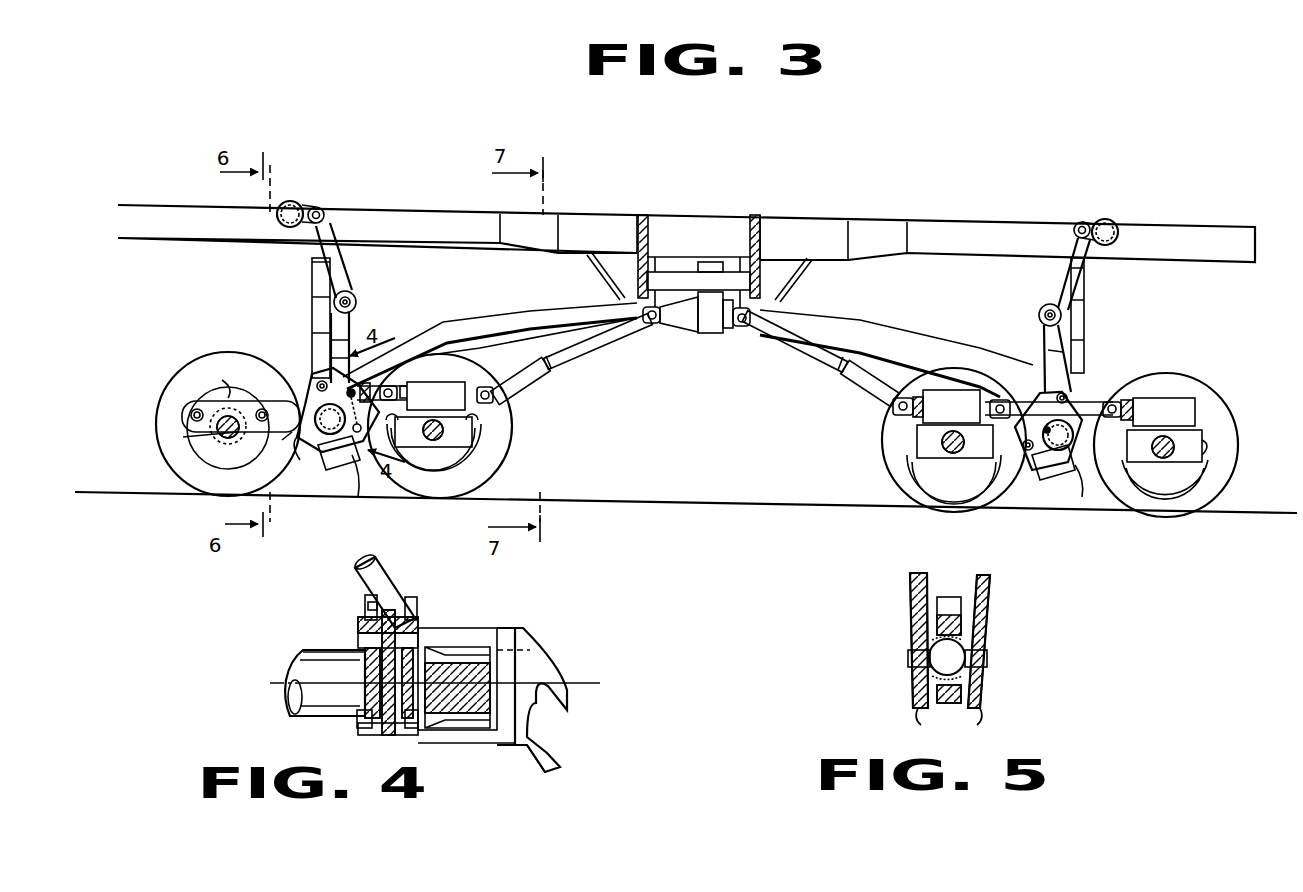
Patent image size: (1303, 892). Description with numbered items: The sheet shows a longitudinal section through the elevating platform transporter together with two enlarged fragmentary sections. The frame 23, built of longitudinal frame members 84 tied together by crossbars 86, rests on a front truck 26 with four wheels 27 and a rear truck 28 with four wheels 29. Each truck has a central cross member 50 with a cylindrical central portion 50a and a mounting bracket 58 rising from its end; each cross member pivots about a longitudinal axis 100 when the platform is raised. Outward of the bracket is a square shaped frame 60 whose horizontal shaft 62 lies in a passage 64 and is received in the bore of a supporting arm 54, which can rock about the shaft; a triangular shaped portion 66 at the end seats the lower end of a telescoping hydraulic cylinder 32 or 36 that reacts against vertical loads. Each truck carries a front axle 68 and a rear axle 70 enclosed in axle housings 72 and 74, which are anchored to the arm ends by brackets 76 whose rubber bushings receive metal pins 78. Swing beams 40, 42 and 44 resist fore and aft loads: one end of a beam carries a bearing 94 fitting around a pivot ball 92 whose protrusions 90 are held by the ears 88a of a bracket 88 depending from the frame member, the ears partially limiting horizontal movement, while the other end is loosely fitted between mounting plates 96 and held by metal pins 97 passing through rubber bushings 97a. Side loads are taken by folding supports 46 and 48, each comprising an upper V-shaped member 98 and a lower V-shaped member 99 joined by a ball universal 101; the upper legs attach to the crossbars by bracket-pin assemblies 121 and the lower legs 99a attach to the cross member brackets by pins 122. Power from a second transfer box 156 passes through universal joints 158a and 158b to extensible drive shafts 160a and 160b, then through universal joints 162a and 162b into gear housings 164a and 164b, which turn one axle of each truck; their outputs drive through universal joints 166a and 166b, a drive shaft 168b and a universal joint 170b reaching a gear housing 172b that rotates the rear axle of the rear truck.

In FIG. 3, the frame 23 is at (745, 212).
In FIG. 3, the front truck 26 is at (180, 431).
In FIG. 3, the wheels 27 is at (160, 390).
In FIG. 3, the rear truck 28 is at (900, 430).
In FIG. 3, the wheels 29 is at (905, 496).
In FIG. 3, the telescoping hydraulic cylinder 32 is at (311, 285).
In FIG. 3, the telescoping hydraulic cylinder 36 is at (1088, 293).
In FIG. 3, the swing beam 40 is at (455, 325).
In FIG. 4, the swing beam 40 is at (360, 668).
In FIG. 5, the swing beam 42 is at (949, 600).
In FIG. 3, the swing beam 44 is at (868, 332).
In FIG. 3, the folding support 46 is at (352, 280).
In FIG. 3, the folding support 48 is at (1052, 275).
In FIG. 3, the central cross member 50 is at (300, 395).
In FIG. 3, the cylindrical central portion 50a is at (340, 462).
In FIG. 4, the cylindrical central portion 50a is at (300, 652).
In FIG. 3, the supporting arm 54 is at (292, 432).
In FIG. 4, the supporting arm 54 is at (465, 655).
In FIG. 3, the mounting bracket 58 is at (312, 398).
In FIG. 4, the mounting bracket 58 is at (360, 700).
In FIG. 4, the square shaped frame 60 is at (535, 632).
In FIG. 4, the horizontal shaft 62 is at (540, 652).
In FIG. 4, the passage 64 is at (505, 746).
In FIG. 3, the triangular shaped portion 66 is at (722, 487).
In FIG. 4, the triangular shaped portion 66 is at (548, 752).
In FIG. 3, the front axle 68 is at (228, 441).
In FIG. 3, the rear axle 70 is at (435, 442).
In FIG. 3, the axle housing 72 is at (222, 440).
In FIG. 3, the axle housing 74 is at (462, 446).
In FIG. 3, the brackets 76 is at (220, 383).
In FIG. 3, the metal pins 78 is at (183, 416).
In FIG. 3, the longitudinal frame member 84 is at (686, 221).
In FIG. 3, the crossbar 86 is at (290, 201).
In FIG. 3, the bracket 88 is at (605, 272).
In FIG. 5, the bracket 88 is at (995, 600).
In FIG. 5, the ears 88a is at (949, 726).
In FIG. 5, the protrusions 90 is at (906, 660).
In FIG. 5, the pivot ball 92 is at (962, 648).
In FIG. 5, the bearing 94 is at (930, 640).
In FIG. 3, the mounting plates 96 is at (298, 462).
In FIG. 4, the mounting plates 96 is at (356, 650).
In FIG. 3, the metal pins 97 is at (1028, 450).
In FIG. 4, the metal pins 97 is at (358, 626).
In FIG. 4, the rubber bushings 97a is at (417, 612).
In FIG. 3, the upper V-shaped member 98 is at (311, 259).
In FIG. 3, the lower V-shaped member 99 is at (328, 318).
In FIG. 4, the legs 99a is at (398, 575).
In FIG. 4, the longitudinal axis 100 is at (240, 686).
In FIG. 3, the ball universal 101 is at (358, 298).
In FIG. 3, the bracket-pin assemblies 121 is at (325, 212).
In FIG. 3, the pins 122 is at (320, 380).
In FIG. 4, the pins 122 is at (362, 610).
In FIG. 3, the second transfer box 156 is at (686, 334).
In FIG. 3, the universal joint 158a is at (652, 326).
In FIG. 3, the universal joint 158b is at (742, 330).
In FIG. 3, the drive shaft 160a is at (575, 358).
In FIG. 3, the drive shaft 160b is at (824, 370).
In FIG. 3, the universal joint 162a is at (490, 386).
In FIG. 3, the universal joint 162b is at (903, 393).
In FIG. 3, the gear housing 164a is at (470, 430).
In FIG. 3, the gear housing 164b is at (930, 448).
In FIG. 3, the universal joint 166a is at (432, 396).
In FIG. 3, the universal joint 166b is at (985, 395).
In FIG. 3, the drive shaft 168b is at (1135, 400).
In FIG. 3, the universal joint 170b is at (1172, 397).
In FIG. 3, the gear housing 172b is at (1208, 446).